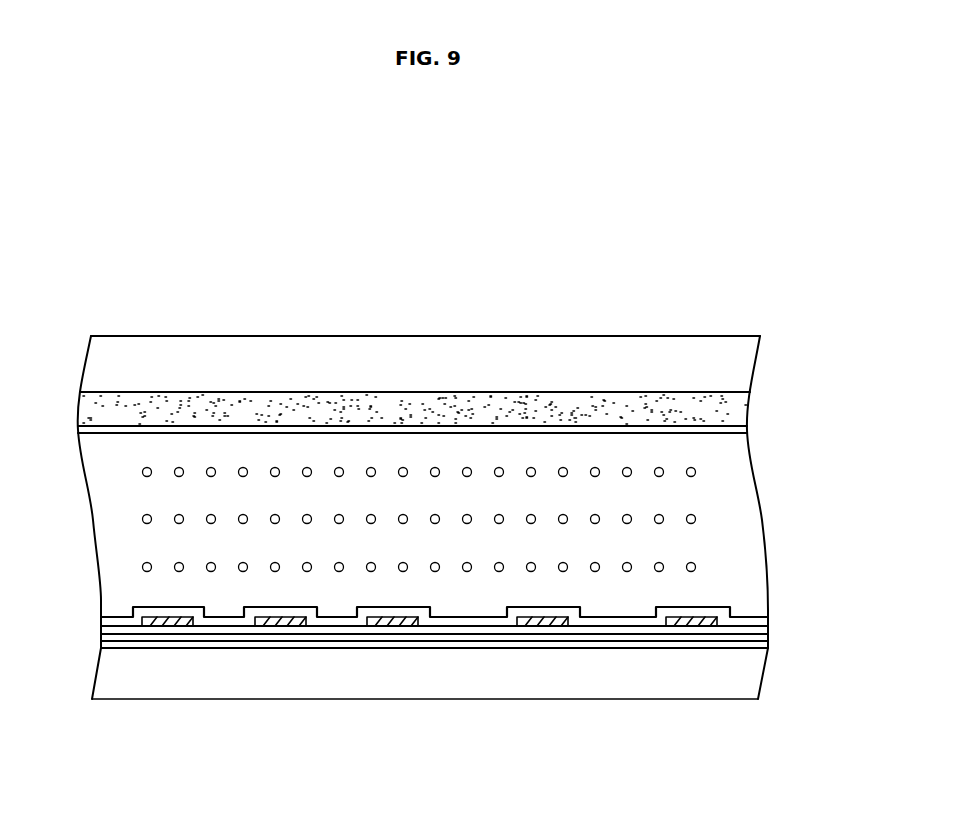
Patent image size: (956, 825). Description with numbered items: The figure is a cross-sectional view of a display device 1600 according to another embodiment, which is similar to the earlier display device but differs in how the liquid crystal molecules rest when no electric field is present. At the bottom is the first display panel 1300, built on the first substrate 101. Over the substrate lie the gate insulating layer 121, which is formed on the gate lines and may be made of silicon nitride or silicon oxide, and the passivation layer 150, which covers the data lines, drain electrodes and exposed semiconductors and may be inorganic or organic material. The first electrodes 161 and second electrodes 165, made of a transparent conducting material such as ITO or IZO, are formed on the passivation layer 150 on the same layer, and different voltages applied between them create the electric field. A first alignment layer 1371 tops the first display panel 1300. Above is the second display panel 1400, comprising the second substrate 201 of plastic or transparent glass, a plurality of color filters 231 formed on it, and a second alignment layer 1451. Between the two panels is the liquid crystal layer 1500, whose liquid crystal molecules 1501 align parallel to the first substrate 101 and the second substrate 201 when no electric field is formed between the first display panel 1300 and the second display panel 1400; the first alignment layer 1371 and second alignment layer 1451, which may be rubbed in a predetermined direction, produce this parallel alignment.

The display device 1600 is at (705, 287).
The second display panel 1400 is at (777, 336).
The intermediate layer with openings 1500 is at (777, 436).
The first display panel 1300 is at (777, 615).
The second alignment layer 1451 is at (295, 430).
The color filters 231 is at (378, 405).
The second substrate 201 is at (453, 350).
The liquid crystal molecules 1501 is at (696, 568).
The second electrodes 165 is at (167, 626).
The first alignment layer 1371 is at (228, 620).
The first electrodes 161 is at (280, 626).
The passivation layer 150 is at (350, 624).
The gate insulating layer 121 is at (472, 642).
The first substrate 101 is at (620, 688).